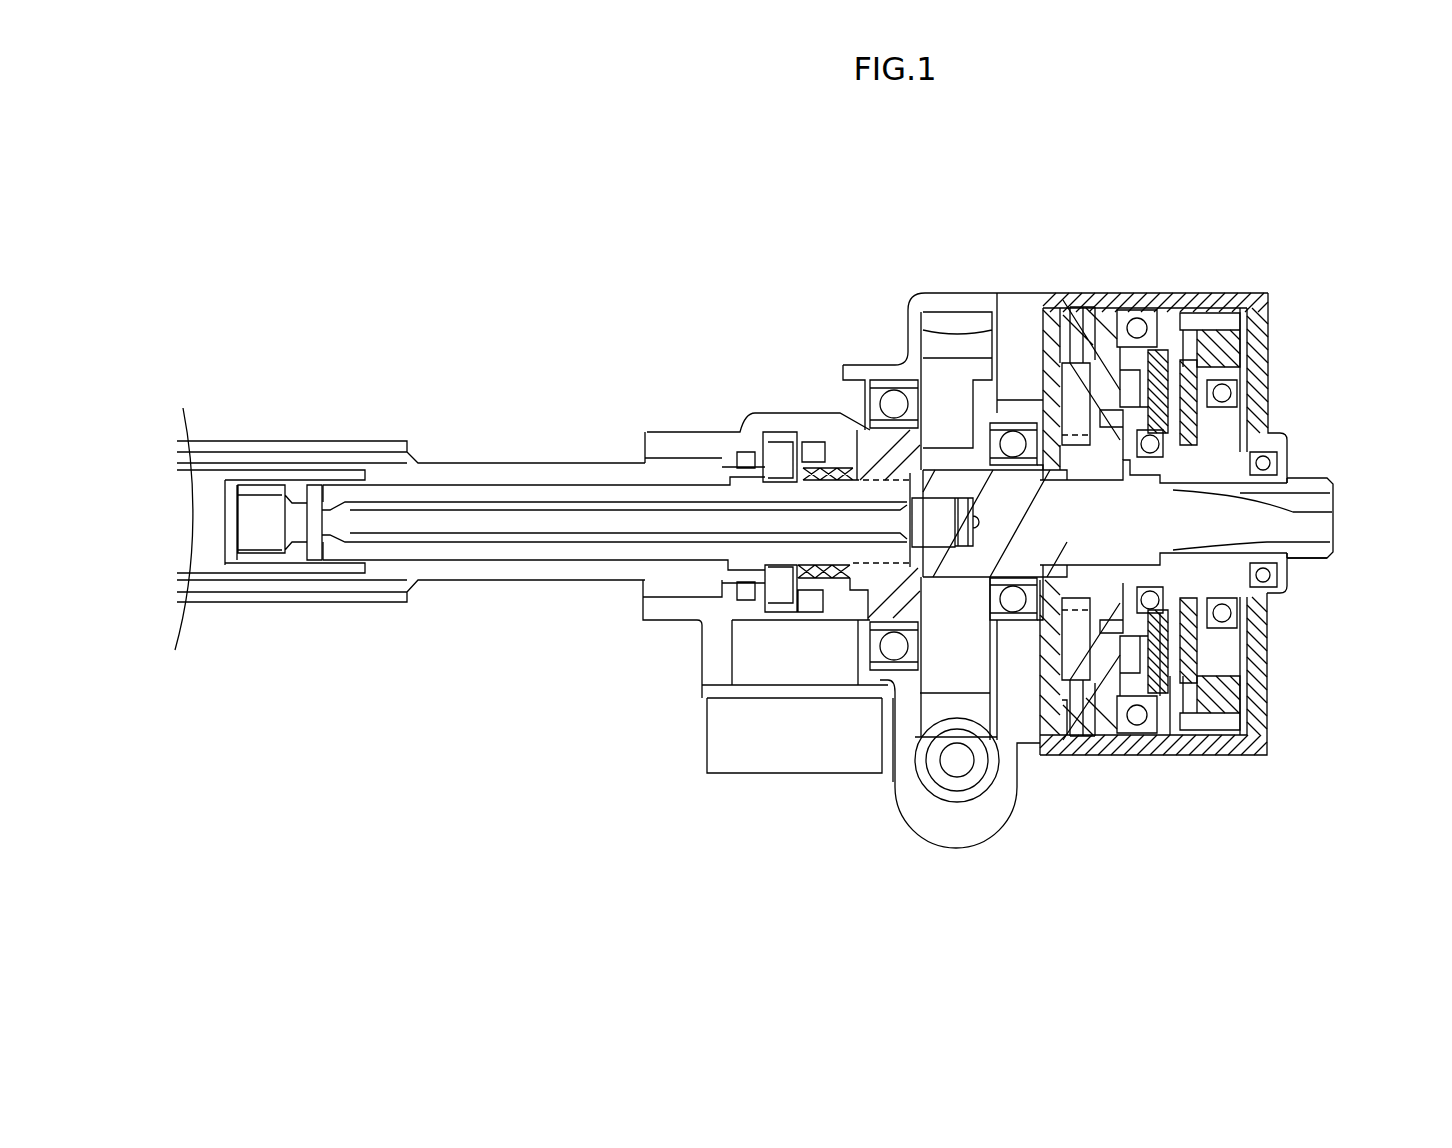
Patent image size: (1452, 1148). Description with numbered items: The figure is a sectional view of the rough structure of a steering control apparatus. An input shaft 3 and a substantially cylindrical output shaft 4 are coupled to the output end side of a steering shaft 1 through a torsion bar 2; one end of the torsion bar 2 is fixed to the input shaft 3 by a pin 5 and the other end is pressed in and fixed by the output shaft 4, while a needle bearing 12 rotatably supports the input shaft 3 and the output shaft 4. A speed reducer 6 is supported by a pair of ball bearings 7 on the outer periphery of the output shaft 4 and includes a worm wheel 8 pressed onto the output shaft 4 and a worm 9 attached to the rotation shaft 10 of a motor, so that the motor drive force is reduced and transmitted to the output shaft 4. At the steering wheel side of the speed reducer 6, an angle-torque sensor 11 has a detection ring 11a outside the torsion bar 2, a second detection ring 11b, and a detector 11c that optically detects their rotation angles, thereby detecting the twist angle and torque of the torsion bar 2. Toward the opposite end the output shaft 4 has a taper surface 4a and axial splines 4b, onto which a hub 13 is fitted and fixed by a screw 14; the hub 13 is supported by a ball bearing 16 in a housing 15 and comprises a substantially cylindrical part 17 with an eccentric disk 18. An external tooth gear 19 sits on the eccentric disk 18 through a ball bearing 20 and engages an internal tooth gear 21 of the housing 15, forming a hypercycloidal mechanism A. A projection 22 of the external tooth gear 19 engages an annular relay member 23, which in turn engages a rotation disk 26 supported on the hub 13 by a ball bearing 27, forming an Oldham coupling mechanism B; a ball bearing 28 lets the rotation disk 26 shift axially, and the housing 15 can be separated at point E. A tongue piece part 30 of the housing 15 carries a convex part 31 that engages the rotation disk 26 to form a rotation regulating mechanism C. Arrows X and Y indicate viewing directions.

The steering shaft 1 is at (210, 495).
The torsion bar 2 is at (540, 525).
The input shaft 3 is at (265, 540).
The output shaft 4 is at (882, 450).
The taper surface 4a is at (1333, 517).
The splines 4b is at (1287, 462).
The pin 5 is at (313, 497).
The speed reducer 6 is at (927, 853).
The ball bearing 7 is at (886, 384).
The worm wheel 8 is at (942, 320).
The worm 9 is at (970, 787).
The rotation shaft 10 is at (945, 765).
The angle-torque sensor 11 is at (718, 721).
The detection ring 11a is at (737, 618).
The detection ring 11b is at (805, 620).
The detector 11c is at (737, 760).
The needle bearing 12 is at (805, 465).
The hub 13 is at (1267, 521).
The screw 14 is at (1323, 555).
The housing 15 is at (1283, 322).
The ball bearing 16 is at (1272, 597).
The substantially cylindrical part 17 is at (1205, 442).
The eccentric disk 18 is at (1213, 423).
The external tooth gear 19 is at (1170, 325).
The ball bearing 20 is at (1228, 378).
The internal tooth gear 21 is at (1210, 313).
The projection 22 is at (1193, 700).
The relay member 23 is at (1163, 700).
The rotation disk 26 is at (1115, 408).
The ball bearing 27 is at (1100, 360).
The ball bearing 28 is at (1160, 340).
The tongue piece part 30 is at (1090, 330).
The convex part 31 is at (1073, 745).
The hypercycloidal mechanism A is at (1227, 193).
The Oldham coupling mechanism B is at (1128, 770).
The rotation regulating mechanism C is at (1012, 840).
The point E is at (1122, 765).
The view direction X is at (1137, 273).
The view direction Y is at (1230, 280).